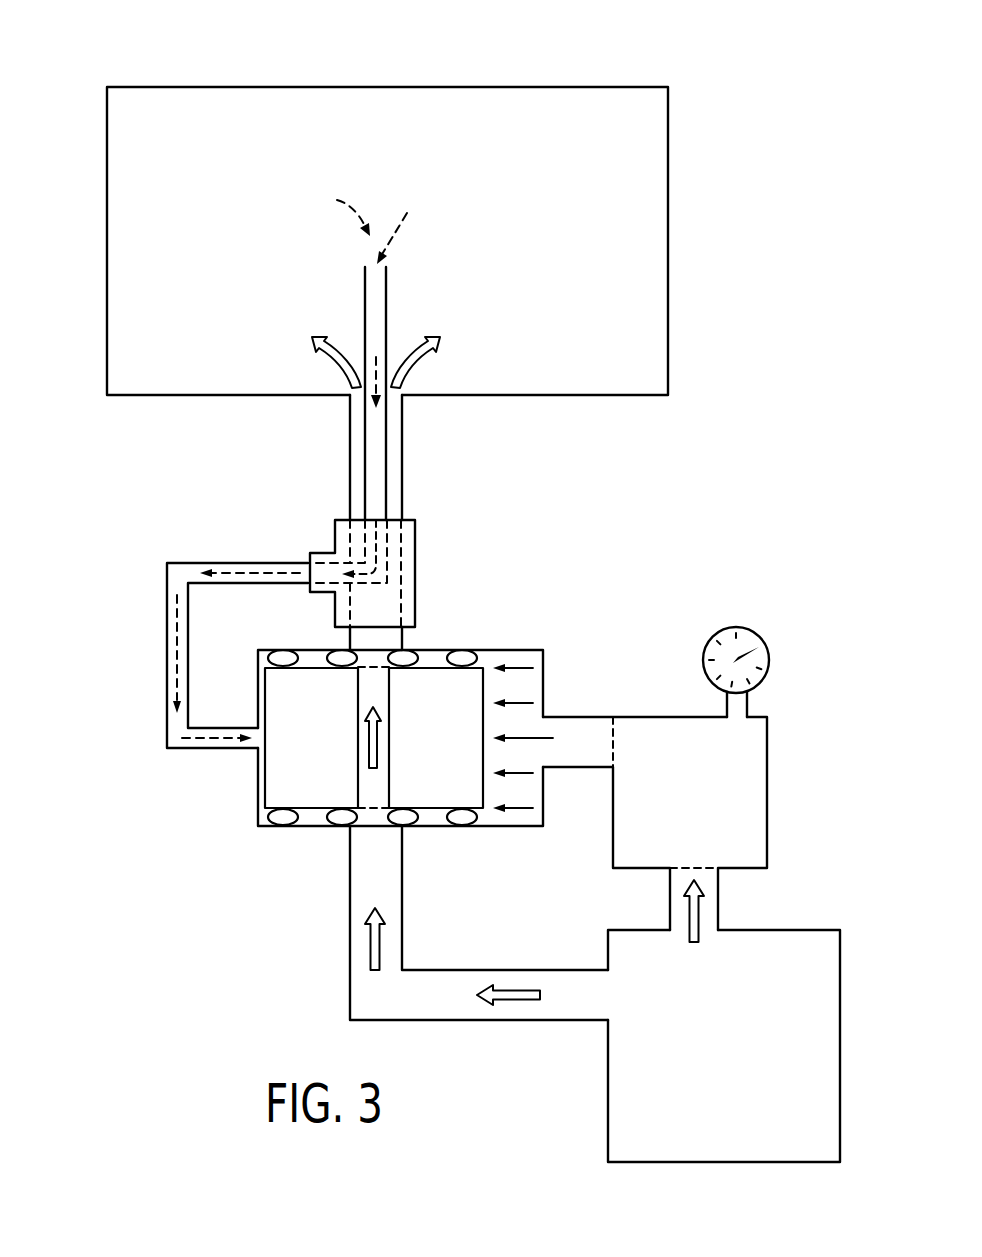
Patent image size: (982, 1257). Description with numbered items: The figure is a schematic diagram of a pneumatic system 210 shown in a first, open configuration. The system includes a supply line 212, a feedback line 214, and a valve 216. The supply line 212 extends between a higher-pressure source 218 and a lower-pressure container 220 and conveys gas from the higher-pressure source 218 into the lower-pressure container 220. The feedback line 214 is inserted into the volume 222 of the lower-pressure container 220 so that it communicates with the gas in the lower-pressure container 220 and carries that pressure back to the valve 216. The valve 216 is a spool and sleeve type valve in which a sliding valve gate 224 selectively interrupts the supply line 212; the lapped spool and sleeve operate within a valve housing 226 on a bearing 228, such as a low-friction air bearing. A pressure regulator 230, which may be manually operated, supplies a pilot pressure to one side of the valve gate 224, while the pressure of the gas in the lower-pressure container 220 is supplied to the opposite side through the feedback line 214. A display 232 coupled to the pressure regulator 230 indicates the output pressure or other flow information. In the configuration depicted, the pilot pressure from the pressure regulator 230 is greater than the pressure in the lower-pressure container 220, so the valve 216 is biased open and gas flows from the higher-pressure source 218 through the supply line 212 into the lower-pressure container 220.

The pneumatic system 210 is at (701, 432).
The supply line 212 is at (348, 468).
The feedback line 214 is at (386, 313).
The valve 216 is at (267, 840).
The higher-pressure source 218 is at (750, 1067).
The lower-pressure container 220 is at (523, 87).
The volume 222 is at (565, 223).
The valve gate 224 is at (271, 772).
The valve housing 226 is at (313, 648).
The bearing 228 is at (407, 827).
The pressure regulator 230 is at (717, 810).
The display 232 is at (734, 627).